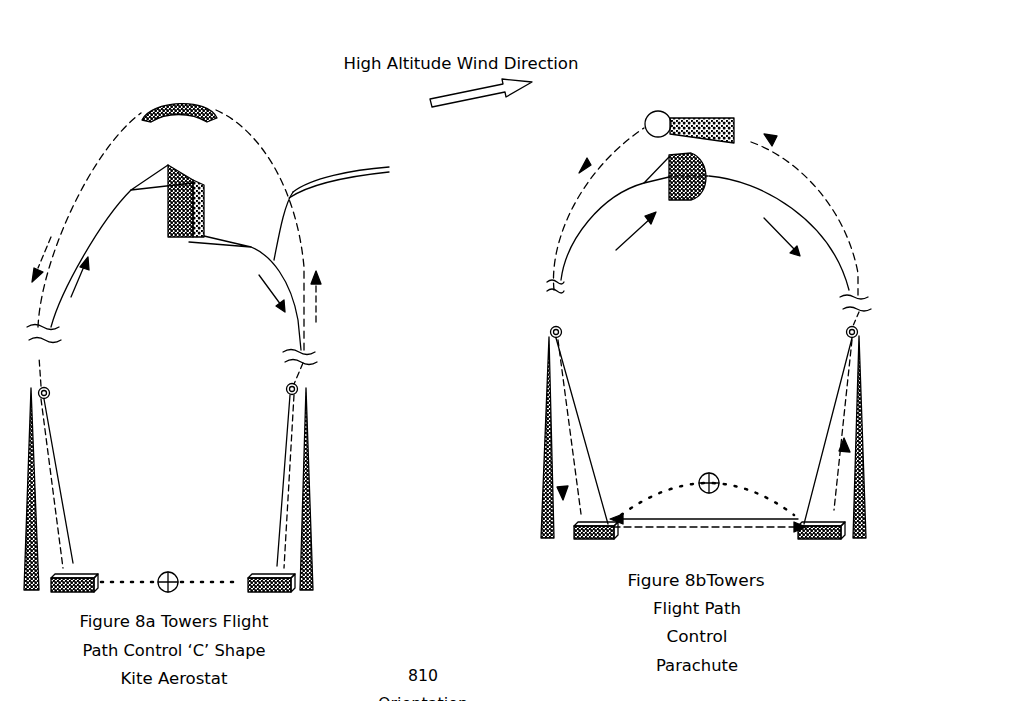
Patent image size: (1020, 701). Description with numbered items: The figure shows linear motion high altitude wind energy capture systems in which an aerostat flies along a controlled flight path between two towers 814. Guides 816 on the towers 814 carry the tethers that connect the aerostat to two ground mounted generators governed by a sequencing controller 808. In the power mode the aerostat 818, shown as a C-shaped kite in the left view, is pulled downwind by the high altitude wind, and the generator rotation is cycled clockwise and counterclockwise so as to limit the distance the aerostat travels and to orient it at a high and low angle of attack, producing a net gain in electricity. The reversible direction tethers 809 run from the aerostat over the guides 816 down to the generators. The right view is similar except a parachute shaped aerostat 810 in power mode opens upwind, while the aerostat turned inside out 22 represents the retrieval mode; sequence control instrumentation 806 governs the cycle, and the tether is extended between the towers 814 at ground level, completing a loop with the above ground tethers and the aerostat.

In FIG. 8B, the aerostat turned inside out (retrieval mode) 22 is at (736, 91).
In FIG. 8B, the sequence control instrumentation 806 is at (722, 473).
In FIG. 8A, the sequencing controller 808 is at (173, 571).
In FIG. 8A, the reversible direction tether 809 is at (402, 196).
In FIG. 8B, the aerostat (power mode) 810 is at (707, 200).
In FIG. 8B, the towers 814 is at (543, 400).
In FIG. 8B, the guides 816 is at (549, 328).
In FIG. 8A, the aerostat (power mode) / tether 818 is at (176, 336).
In FIG. 8B, the aerostat (power mode) / tether 818 is at (698, 518).